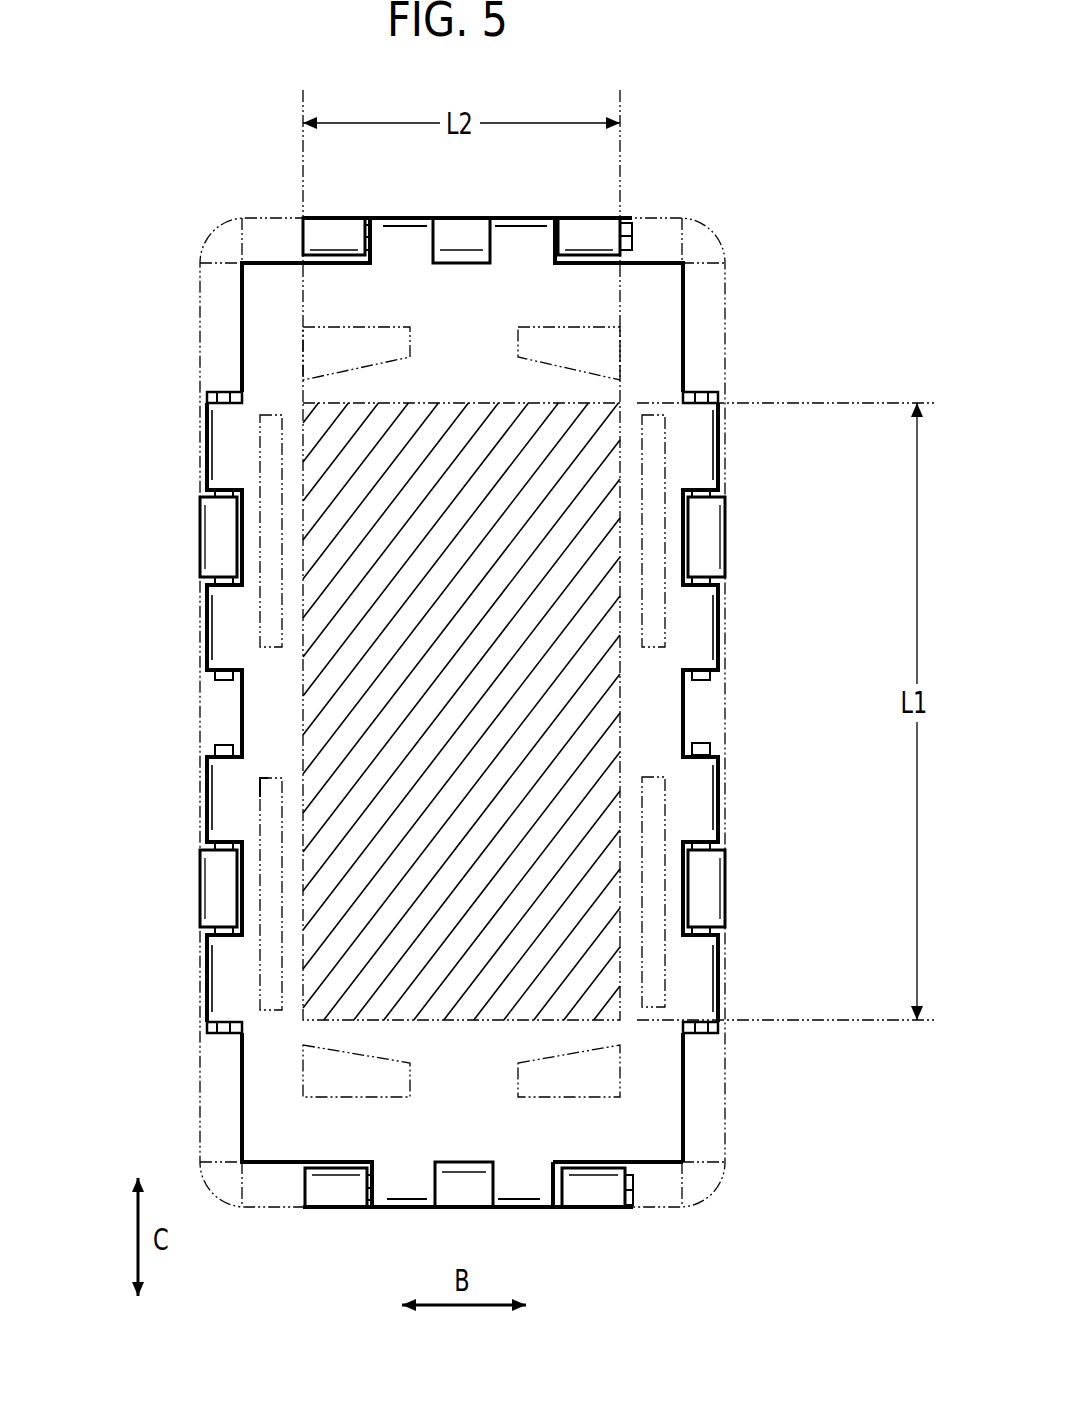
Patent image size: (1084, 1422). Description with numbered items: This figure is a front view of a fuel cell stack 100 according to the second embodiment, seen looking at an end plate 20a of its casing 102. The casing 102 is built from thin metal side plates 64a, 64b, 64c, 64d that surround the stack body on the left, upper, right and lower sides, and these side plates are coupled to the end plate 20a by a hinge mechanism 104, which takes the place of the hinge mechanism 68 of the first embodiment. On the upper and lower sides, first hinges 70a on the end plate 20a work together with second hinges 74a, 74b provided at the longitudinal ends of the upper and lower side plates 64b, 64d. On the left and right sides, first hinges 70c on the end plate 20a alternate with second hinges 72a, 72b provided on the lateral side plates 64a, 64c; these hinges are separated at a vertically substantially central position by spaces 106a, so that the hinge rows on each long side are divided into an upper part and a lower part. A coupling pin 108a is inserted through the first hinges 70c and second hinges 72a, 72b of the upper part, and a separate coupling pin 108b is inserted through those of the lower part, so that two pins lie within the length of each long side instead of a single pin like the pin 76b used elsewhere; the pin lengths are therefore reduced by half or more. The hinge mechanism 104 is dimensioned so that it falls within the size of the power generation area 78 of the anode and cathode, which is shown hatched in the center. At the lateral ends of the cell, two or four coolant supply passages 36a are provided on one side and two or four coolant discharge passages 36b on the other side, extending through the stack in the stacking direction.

The fuel cell stack 100 is at (726, 60).
The casing 102 is at (749, 282).
The hinge mechanism 104 is at (749, 352).
The side plate 64a is at (722, 975).
The side plate 64b is at (455, 215).
The side plate 64c is at (198, 568).
The side plate 64d is at (588, 1210).
The hinge mechanism 68 is at (578, 199).
The first hinge 70a is at (514, 232).
The first hinge 70c is at (213, 437).
The second hinge 72a is at (712, 530).
The second hinge 72b is at (212, 530).
The second hinge 74a is at (335, 233).
The second hinge 74b is at (337, 1192).
The corner connection piece 76b is at (635, 236).
The power generation area 78 is at (350, 737).
The coolant supply passage 36a is at (262, 785).
The coolant discharge passage 36b is at (655, 548).
The space 106a is at (240, 707).
The coupling pin 108a is at (218, 392).
The coupling pin 108b is at (217, 1033).
The end plate 20a is at (652, 1096).